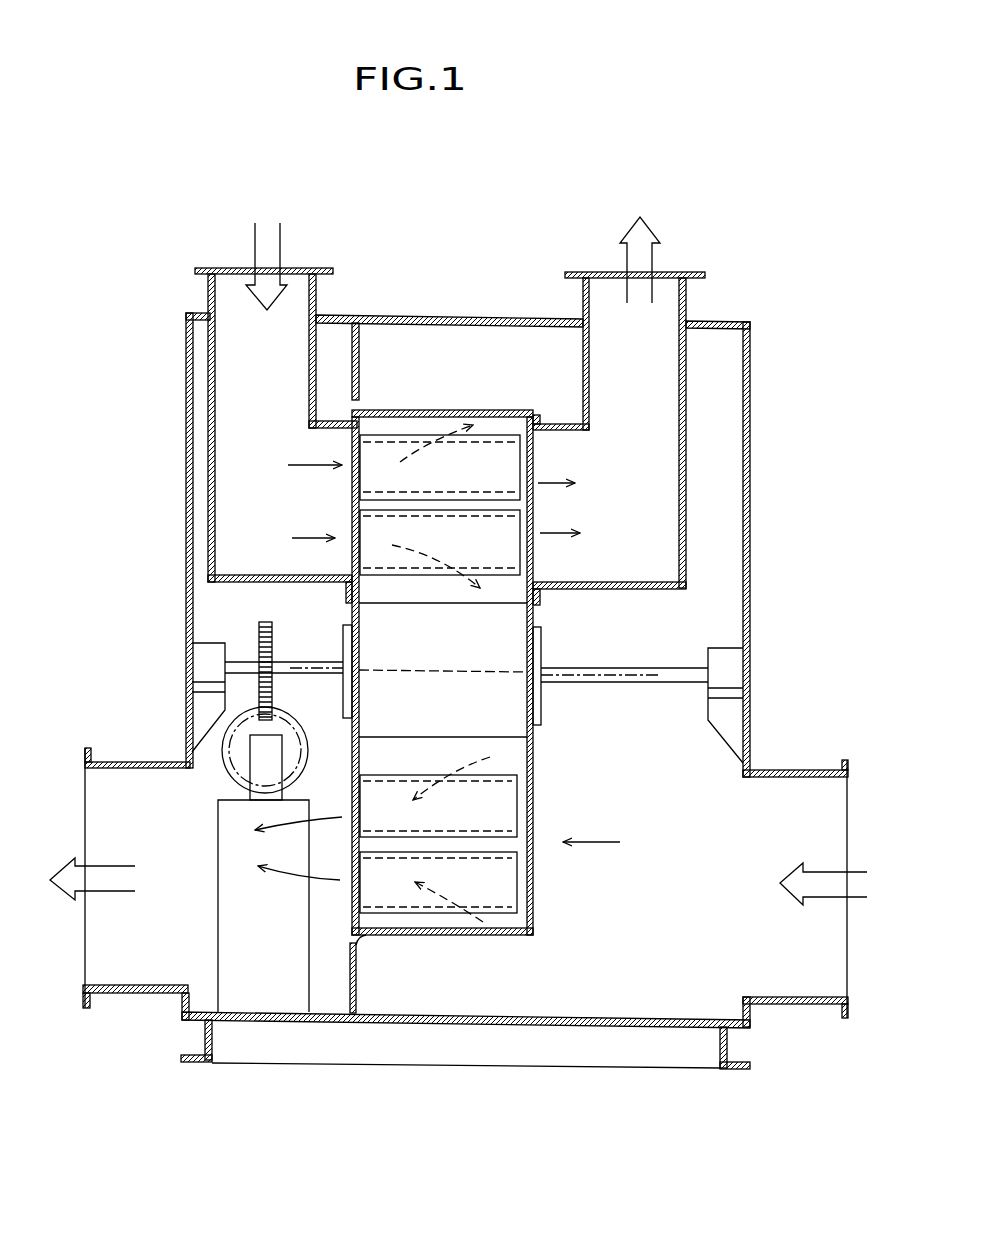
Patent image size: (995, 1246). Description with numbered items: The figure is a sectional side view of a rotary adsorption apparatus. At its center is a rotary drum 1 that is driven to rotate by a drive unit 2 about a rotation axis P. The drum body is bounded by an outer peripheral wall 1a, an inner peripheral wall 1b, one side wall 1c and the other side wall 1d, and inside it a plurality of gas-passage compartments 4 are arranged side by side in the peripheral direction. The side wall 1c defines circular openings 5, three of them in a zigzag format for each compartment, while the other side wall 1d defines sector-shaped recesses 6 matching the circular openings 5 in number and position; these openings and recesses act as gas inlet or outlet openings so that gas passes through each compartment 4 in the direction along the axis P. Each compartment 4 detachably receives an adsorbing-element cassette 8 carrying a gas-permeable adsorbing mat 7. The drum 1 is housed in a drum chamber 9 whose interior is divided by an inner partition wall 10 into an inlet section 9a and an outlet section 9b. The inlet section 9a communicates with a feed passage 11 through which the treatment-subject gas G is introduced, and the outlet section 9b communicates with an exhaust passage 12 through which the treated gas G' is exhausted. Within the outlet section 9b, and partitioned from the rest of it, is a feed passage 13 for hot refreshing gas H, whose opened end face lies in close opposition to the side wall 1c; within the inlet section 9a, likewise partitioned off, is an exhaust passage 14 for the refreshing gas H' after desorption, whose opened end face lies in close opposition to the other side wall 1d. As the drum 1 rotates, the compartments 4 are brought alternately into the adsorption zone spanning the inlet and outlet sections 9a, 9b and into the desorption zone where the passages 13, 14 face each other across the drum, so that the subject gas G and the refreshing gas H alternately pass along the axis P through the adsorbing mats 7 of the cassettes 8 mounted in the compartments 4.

The rotary drum 1 is at (472, 649).
The outer peripheral wall 1a is at (432, 410).
The inner peripheral wall 1b is at (510, 742).
The side wall 1c is at (350, 767).
The other side wall 1d is at (537, 575).
The drive unit 2 is at (289, 650).
The gas-passage compartments 4 is at (395, 425).
The circular openings 5 is at (353, 522).
The sector-shaped recesses 6 is at (537, 462).
The gas-permeable adsorbing mat 7 is at (408, 572).
The adsorbing-element cassette 8 is at (504, 426).
The drum chamber 9 is at (463, 1104).
The inlet section 9a is at (460, 1002).
The outlet section 9b is at (335, 1000).
The inner partition wall 10 is at (360, 345).
The feed passage 11 is at (783, 972).
The exhaust passage 12 is at (138, 965).
The refreshing-gas feed passage 13 is at (276, 435).
The refreshing-gas exhaust passage 14 is at (619, 438).
The rotation axis P is at (490, 660).
The hot refreshing gas H is at (266, 245).
The refreshing gas after desorption H' is at (641, 239).
The treatment-subject gas G is at (823, 810).
The treated subject gas G' is at (92, 797).